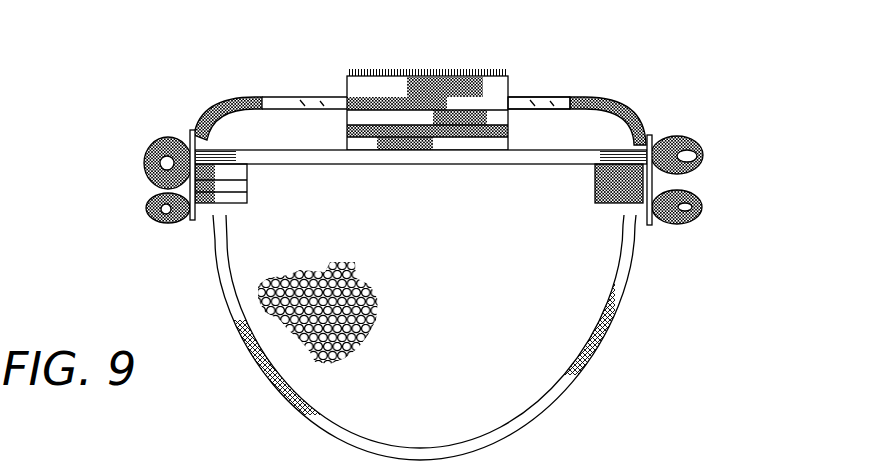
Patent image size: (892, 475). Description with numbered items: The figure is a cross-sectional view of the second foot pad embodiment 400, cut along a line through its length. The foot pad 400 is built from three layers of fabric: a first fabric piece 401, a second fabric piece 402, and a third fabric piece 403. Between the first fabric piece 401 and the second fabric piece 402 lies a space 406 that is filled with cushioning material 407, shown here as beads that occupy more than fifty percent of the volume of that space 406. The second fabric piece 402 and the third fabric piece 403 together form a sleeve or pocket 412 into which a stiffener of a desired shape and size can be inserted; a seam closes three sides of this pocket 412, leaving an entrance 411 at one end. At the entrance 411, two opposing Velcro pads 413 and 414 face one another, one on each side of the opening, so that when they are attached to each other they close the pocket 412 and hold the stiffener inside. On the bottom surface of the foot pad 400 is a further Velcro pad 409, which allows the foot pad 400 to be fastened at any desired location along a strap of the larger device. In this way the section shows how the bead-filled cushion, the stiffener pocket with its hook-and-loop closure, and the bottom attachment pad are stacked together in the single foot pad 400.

The foot pad 400 is at (158, 126).
The first fabric piece 401 is at (396, 140).
The second fabric piece 402 is at (282, 167).
The third fabric piece 403 is at (287, 97).
The space 406 is at (527, 355).
The cushioning material 407 is at (323, 362).
The Velcro pad 409 is at (460, 78).
The entrance 411 is at (592, 125).
The pocket 412 is at (724, 157).
The Velcro pad 413 is at (360, 117).
The Velcro pad 414 is at (490, 140).